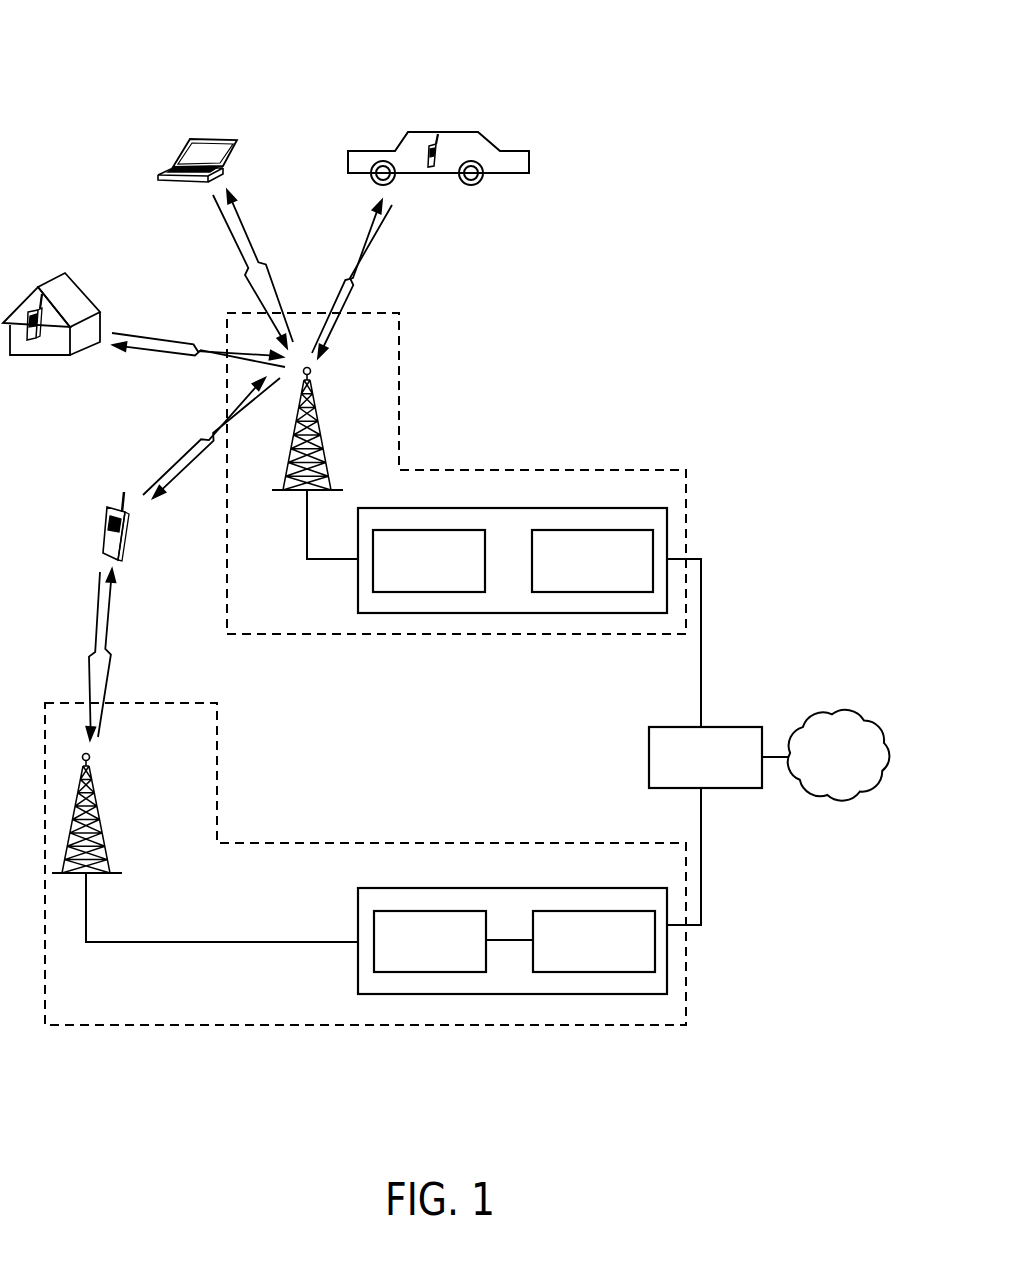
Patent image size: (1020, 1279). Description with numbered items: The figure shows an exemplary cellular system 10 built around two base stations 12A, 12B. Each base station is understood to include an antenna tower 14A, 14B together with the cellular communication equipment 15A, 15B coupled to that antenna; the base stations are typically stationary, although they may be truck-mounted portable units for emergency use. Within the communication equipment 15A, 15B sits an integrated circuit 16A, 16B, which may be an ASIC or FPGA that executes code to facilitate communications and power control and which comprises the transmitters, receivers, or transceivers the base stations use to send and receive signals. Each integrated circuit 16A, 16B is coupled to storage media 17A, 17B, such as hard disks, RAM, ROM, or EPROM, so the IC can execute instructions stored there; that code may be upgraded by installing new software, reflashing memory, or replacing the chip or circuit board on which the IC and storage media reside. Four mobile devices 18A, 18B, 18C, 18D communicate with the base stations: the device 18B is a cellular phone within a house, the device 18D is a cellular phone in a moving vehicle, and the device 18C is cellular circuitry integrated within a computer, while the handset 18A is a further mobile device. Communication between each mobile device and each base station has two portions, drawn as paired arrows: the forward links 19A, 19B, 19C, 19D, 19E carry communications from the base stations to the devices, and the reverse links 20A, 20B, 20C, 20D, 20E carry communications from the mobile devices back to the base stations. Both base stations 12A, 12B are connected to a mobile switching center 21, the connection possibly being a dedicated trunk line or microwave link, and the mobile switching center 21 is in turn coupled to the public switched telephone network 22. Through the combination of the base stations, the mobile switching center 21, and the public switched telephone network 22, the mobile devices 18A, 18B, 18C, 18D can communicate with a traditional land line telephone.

The cellular system 10 is at (112, 65).
The base station 12A is at (420, 655).
The base station 12B is at (320, 1040).
The antenna tower 14A is at (295, 464).
The antenna tower 14B is at (205, 848).
The cellular communication equipment 15A is at (529, 604).
The cellular communication equipment 15B is at (529, 891).
The integrated circuit 16A is at (454, 584).
The integrated circuit 16B is at (455, 966).
The storage media 17A is at (618, 584).
The storage media 17B is at (619, 966).
The mobile device 18A is at (78, 526).
The mobile device 18B is at (51, 335).
The mobile device 18C is at (210, 139).
The mobile device 18D is at (438, 176).
The forward link 19A is at (216, 457).
The forward link 19B is at (197, 369).
The forward link 19C is at (221, 271).
The forward link 19D is at (332, 276).
The forward link 19E is at (56, 656).
The reverse link 20A is at (191, 436).
The reverse link 20B is at (199, 334).
The reverse link 20C is at (262, 266).
The reverse link 20D is at (380, 281).
The reverse link 20E is at (135, 653).
The mobile switching center 21 is at (685, 757).
The public switched telephone network 22 is at (839, 775).